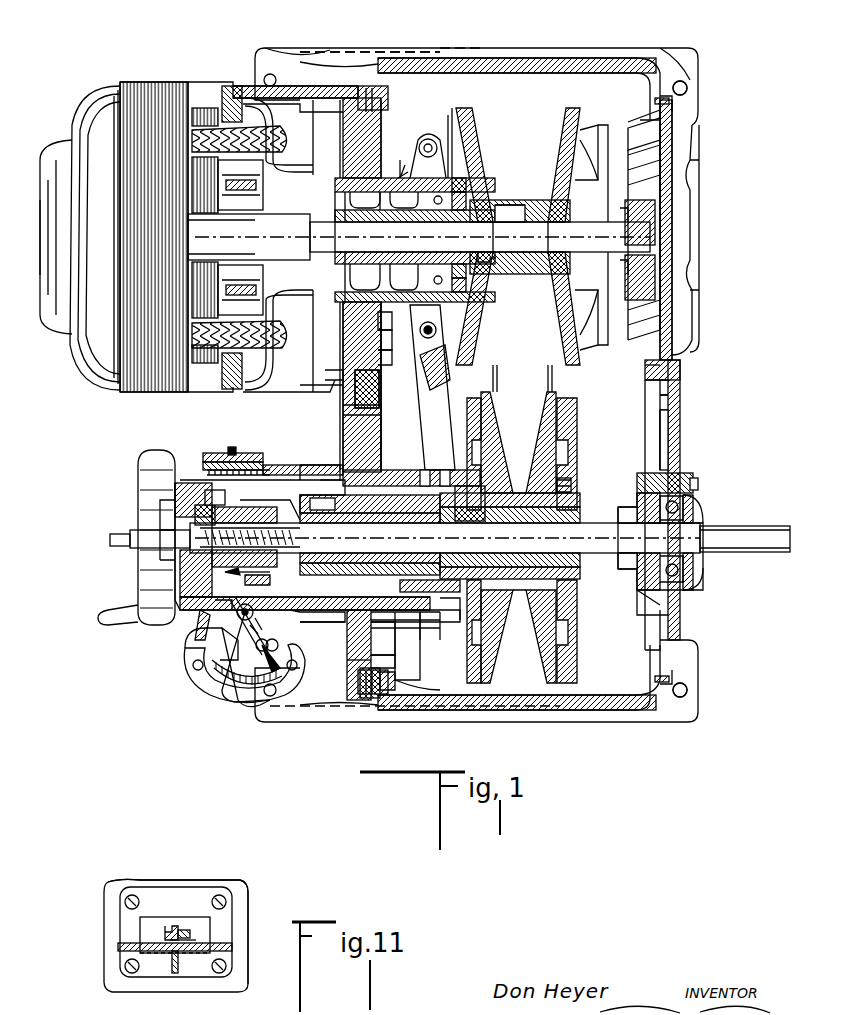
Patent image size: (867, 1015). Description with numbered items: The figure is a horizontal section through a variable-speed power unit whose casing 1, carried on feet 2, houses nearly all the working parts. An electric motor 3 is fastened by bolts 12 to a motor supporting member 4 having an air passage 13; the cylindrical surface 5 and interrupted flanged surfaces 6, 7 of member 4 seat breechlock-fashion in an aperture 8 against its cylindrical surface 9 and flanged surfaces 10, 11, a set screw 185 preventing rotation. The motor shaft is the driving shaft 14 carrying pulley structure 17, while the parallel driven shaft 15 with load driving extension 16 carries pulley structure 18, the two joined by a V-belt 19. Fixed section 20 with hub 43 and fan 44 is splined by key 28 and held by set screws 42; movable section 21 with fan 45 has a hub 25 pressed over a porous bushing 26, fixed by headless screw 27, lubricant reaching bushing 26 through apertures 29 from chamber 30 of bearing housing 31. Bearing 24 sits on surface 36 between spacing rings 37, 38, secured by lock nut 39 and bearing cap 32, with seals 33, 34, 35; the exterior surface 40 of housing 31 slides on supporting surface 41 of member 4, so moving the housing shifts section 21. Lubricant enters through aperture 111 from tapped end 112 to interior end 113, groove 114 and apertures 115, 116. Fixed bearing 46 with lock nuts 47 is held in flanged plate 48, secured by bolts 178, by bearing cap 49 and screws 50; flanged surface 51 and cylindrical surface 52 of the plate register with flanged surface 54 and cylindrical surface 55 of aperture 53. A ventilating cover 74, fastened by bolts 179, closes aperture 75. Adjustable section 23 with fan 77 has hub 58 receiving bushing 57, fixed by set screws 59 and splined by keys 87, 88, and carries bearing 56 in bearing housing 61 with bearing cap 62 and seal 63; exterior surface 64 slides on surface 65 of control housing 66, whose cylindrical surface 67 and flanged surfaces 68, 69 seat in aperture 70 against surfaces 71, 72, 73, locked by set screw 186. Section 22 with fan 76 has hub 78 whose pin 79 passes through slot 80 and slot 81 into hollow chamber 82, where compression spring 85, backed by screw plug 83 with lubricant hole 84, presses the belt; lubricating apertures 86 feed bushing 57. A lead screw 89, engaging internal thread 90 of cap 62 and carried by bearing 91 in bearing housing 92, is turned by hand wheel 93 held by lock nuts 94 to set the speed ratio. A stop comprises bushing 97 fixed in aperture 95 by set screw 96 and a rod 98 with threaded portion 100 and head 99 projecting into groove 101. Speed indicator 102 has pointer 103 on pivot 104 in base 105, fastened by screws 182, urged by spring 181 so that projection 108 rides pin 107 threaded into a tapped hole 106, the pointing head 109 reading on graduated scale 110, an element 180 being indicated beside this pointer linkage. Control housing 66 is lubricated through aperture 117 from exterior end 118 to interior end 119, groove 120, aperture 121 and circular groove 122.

In FIG. 1, the casing 1 is at (442, 50).
In FIG. 1, the feet 2 is at (262, 60).
In FIG. 1, the electric motor 3 is at (155, 82).
In FIG. 1, the motor supporting member 4 is at (270, 392).
In FIG. 1, the cylindrical surface 5 is at (343, 340).
In FIG. 1, the interrupted flanged surface 6 is at (390, 352).
In FIG. 1, the interrupted flanged surface 7 is at (343, 398).
In FIG. 1, the aperture 8 is at (390, 340).
In FIG. 1, the interior cylindrical surface 9 is at (385, 385).
In FIG. 1, the interrupted flanged surface 10 is at (343, 410).
In FIG. 1, the interrupted flanged surface 11 is at (390, 368).
In FIG. 1, the bolts 12 is at (320, 114).
In FIG. 1, the air passage 13 is at (300, 380).
In FIG. 1, the driving shaft 14 is at (302, 255).
In FIG. 1, the driven shaft 15 is at (592, 535).
In FIG. 1, the load driving extension 16 is at (768, 548).
In FIG. 1, the adjustable pulley structure 17 is at (539, 230).
In FIG. 1, the adjustable pulley structure 18 is at (510, 535).
In FIG. 1, the V-belt 19 is at (530, 377).
In FIG. 1, the right hand pulley section 20 is at (556, 158).
In FIG. 1, the left hand pulley section 21 is at (480, 160).
In FIG. 1, the left hand pulley section 22 is at (498, 416).
In FIG. 1, the right hand pulley section 23 is at (545, 416).
In FIG. 1, the bearing 24 is at (418, 140).
In FIG. 1, the hub 25 is at (488, 200).
In FIG. 1, the bushing 26 is at (340, 222).
In FIG. 1, the headless screw 27 is at (490, 262).
In FIG. 1, the key 28 is at (510, 213).
In FIG. 1, the lubricating apertures 29 is at (365, 199).
In FIG. 1, the chamber 30 is at (365, 276).
In FIG. 1, the bearing housing 31 is at (335, 185).
In FIG. 1, the bearing cap 32 is at (462, 227).
In FIG. 1, the lubricant retaining seal 33 is at (453, 239).
In FIG. 1, the lubricant retaining seal 34 is at (340, 218).
In FIG. 1, the lubricant retaining seal 35 is at (371, 201).
In FIG. 1, the extended cylindrical surface 36 is at (408, 160).
In FIG. 1, the spacing ring 37 is at (408, 168).
In FIG. 1, the spacing ring 38 is at (408, 176).
In FIG. 1, the lock nut 39 is at (404, 199).
In FIG. 1, the exterior surface 40 is at (378, 178).
In FIG. 1, the interior supporting surface 41 is at (360, 178).
In FIG. 1, the set screws 42 is at (628, 270).
In FIG. 1, the hub 43 is at (636, 205).
In FIG. 1, the fan 44 is at (598, 125).
In FIG. 1, the fan 45 is at (450, 120).
In FIG. 1, the fixed bearing 46 is at (637, 580).
In FIG. 1, the lock nuts 47 is at (700, 505).
In FIG. 1, the flanged plate 48 is at (682, 455).
In FIG. 1, the bearing cap 49 is at (640, 500).
In FIG. 1, the screws 50 is at (698, 482).
In FIG. 1, the flanged surface 51 is at (682, 408).
In FIG. 1, the cylindrical surface 52 is at (682, 398).
In FIG. 1, the aperture 53 is at (650, 427).
In FIG. 1, the flanged surface 54 is at (650, 400).
In FIG. 1, the interior cylindrical surface 55 is at (682, 380).
In FIG. 1, the bearing 56 is at (308, 465).
In FIG. 1, the bushing 57 is at (580, 568).
In FIG. 1, the hub 58 is at (575, 590).
In FIG. 1, the set screws 59 is at (568, 496).
In FIG. 1, the bearing housing 61 is at (407, 626).
In FIG. 1, the bearing cap 62 is at (268, 504).
In FIG. 1, the lubricant-retaining seal 63 is at (329, 501).
In FIG. 1, the exterior surface 64 is at (426, 626).
In FIG. 1, the interior supporting surface 65 is at (448, 615).
In FIG. 1, the control housing 66 is at (348, 654).
In FIG. 11, the control housing 66 is at (250, 890).
In FIG. 1, the exterior cylindrical surface 67 is at (380, 638).
In FIG. 1, the interrupted flanged surface 68 is at (398, 672).
In FIG. 1, the interrupted flanged surface 69 is at (350, 668).
In FIG. 1, the aperture 70 is at (400, 640).
In FIG. 1, the interrupted interior cylindrical surface 71 is at (386, 690).
In FIG. 1, the interrupted flanged surface 72 is at (390, 682).
In FIG. 1, the interrupted flanged surface 73 is at (366, 680).
In FIG. 1, the ventilating cover 74 is at (697, 178).
In FIG. 1, the aperture 75 is at (658, 120).
In FIG. 1, the fan 76 is at (468, 432).
In FIG. 1, the fan 77 is at (578, 420).
In FIG. 1, the hub 78 is at (447, 478).
In FIG. 1, the pin 79 is at (427, 478).
In FIG. 1, the slot 80 is at (370, 501).
In FIG. 1, the slot 81 is at (470, 499).
In FIG. 1, the hollow chamber 82 is at (430, 590).
In FIG. 1, the screw plug 83 is at (244, 537).
In FIG. 1, the lubricant hole 84 is at (250, 532).
In FIG. 1, the compression spring 85 is at (370, 575).
In FIG. 1, the lubricating apertures 86 is at (520, 500).
In FIG. 1, the key 87 is at (578, 578).
In FIG. 1, the key 88 is at (580, 555).
In FIG. 1, the lead screw 89 is at (207, 509).
In FIG. 1, the internal thread 90 is at (219, 498).
In FIG. 1, the bearing 91 is at (190, 483).
In FIG. 1, the bearing housing 92 is at (175, 498).
In FIG. 1, the hand wheel 93 is at (148, 628).
In FIG. 1, the lock nuts 94 is at (138, 548).
In FIG. 1, the aperture 95 is at (222, 455).
In FIG. 1, the set screw 96 is at (234, 450).
In FIG. 1, the bushing 97 is at (210, 456).
In FIG. 1, the rod 98 is at (288, 465).
In FIG. 1, the offset wide head 99 is at (332, 470).
In FIG. 1, the threaded portion 100 is at (275, 455).
In FIG. 1, the groove 101 is at (316, 465).
In FIG. 1, the speed indicator 102 is at (212, 652).
In FIG. 1, the pointer 103 is at (270, 650).
In FIG. 11, the pointer 103 is at (200, 935).
In FIG. 1, the pivot 104 is at (233, 644).
In FIG. 1, the base 105 is at (220, 612).
In FIG. 11, the base 105 is at (120, 950).
In FIG. 1, the tapped holes 106 is at (256, 612).
In FIG. 1, the pin 107 is at (238, 572).
In FIG. 1, the projection 108 is at (245, 582).
In FIG. 1, the adjustable pointing head 109 is at (272, 666).
In FIG. 11, the adjustable pointing head 109 is at (192, 925).
In FIG. 1, the graduated scale 110 is at (225, 690).
In FIG. 1, the aperture 111 is at (335, 370).
In FIG. 1, the accessible end 112 is at (330, 386).
In FIG. 1, the interior end 113 is at (388, 350).
In FIG. 1, the groove 114 is at (386, 336).
In FIG. 1, the aperture 115 is at (386, 277).
In FIG. 1, the aperture 116 is at (384, 320).
In FIG. 1, the lubricating aperture 117 is at (405, 635).
In FIG. 1, the exterior end 118 is at (340, 625).
In FIG. 1, the interior end 119 is at (405, 626).
In FIG. 1, the groove 120 is at (405, 617).
In FIG. 1, the aperture 121 is at (312, 622).
In FIG. 1, the circular groove 122 is at (368, 470).
In FIG. 1, the bolts 178 is at (690, 680).
In FIG. 1, the bolts 179 is at (690, 96).
In FIG. 1, the pin 180 is at (246, 630).
In FIG. 1, the spring 181 is at (200, 618).
In FIG. 1, the screws 182 is at (256, 648).
In FIG. 11, the screws 182 is at (216, 898).
In FIG. 1, the set screw 185 is at (375, 90).
In FIG. 1, the set screw 186 is at (372, 700).